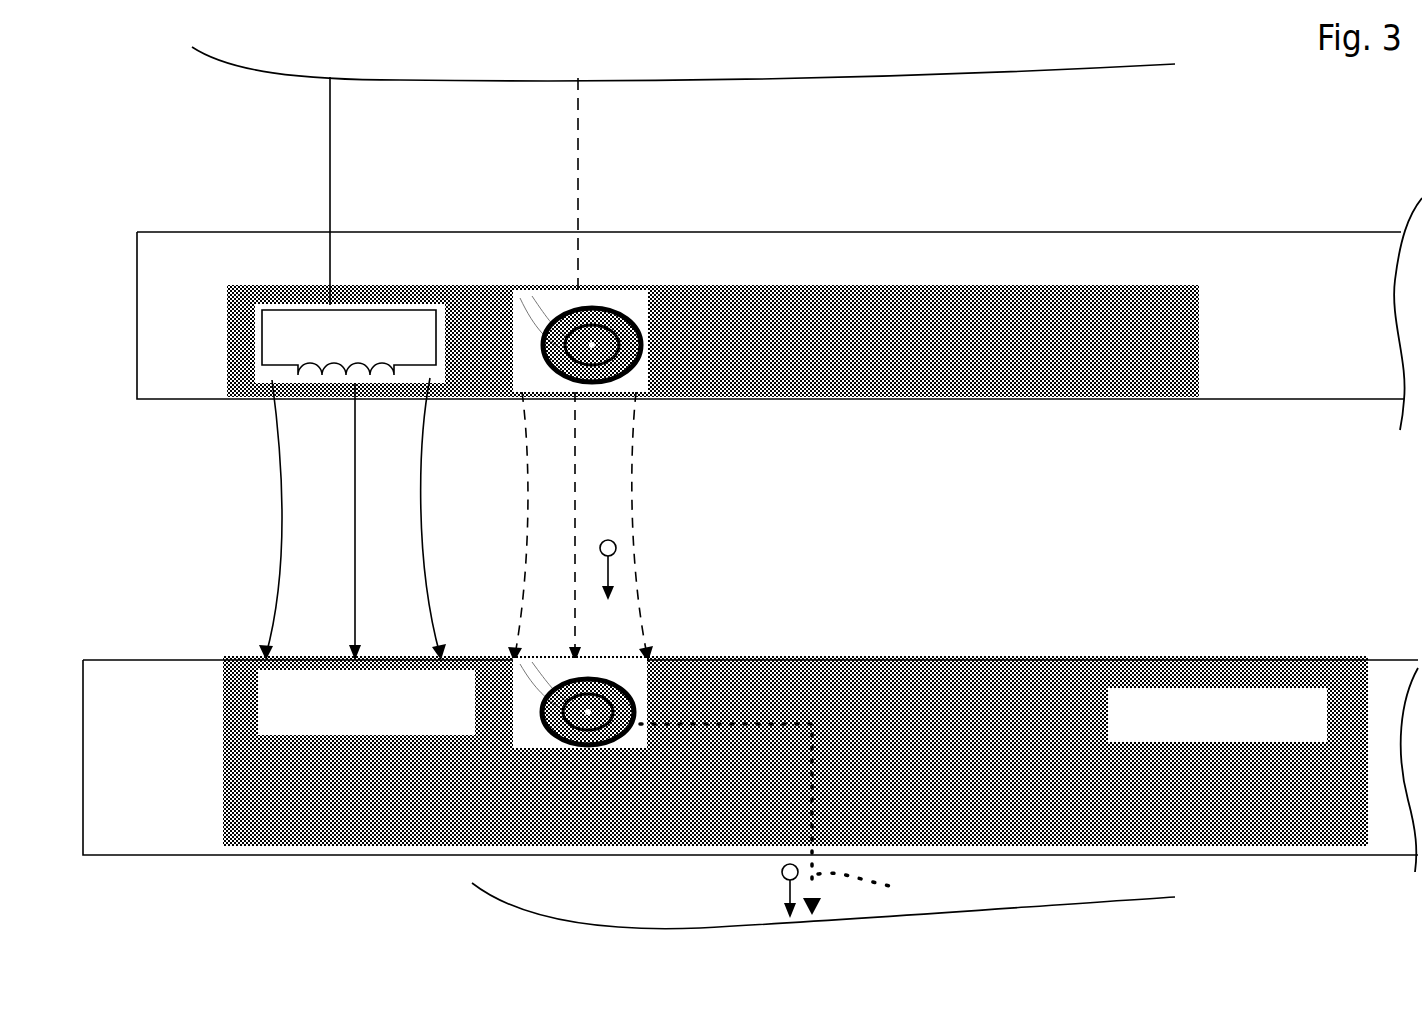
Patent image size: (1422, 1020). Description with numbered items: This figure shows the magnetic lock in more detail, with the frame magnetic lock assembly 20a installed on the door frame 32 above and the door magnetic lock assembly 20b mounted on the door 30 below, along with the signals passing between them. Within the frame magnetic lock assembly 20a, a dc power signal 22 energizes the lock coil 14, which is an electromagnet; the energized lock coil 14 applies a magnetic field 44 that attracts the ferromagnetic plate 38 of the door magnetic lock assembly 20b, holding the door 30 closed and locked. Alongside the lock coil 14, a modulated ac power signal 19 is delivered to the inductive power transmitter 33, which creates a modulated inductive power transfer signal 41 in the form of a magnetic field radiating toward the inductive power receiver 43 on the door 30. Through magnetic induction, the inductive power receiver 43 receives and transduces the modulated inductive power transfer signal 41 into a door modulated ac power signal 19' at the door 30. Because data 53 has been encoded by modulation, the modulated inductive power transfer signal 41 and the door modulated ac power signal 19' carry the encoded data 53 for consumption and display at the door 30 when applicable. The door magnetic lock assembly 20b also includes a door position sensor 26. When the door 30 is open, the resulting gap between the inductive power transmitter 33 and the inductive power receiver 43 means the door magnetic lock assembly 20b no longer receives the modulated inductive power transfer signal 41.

The lock coil 14 is at (275, 305).
The dc power signal 22 is at (330, 130).
The modulated ac power signal 19 is at (532, 185).
The inductive power transmitter 33 is at (650, 318).
The door frame 32 is at (1320, 359).
The frame magnetic lock assembly 20a is at (1199, 347).
The door magnetic lock assembly 20b is at (1213, 657).
The magnetic field 44 is at (420, 545).
The modulated inductive power transfer signal 41 is at (632, 505).
The data 53 is at (608, 573).
The inductive power receiver 43 is at (645, 688).
The ferromagnetic plate 38 is at (465, 709).
The door 30 is at (117, 794).
The door position sensor 26 is at (1208, 736).
The door modulated ac power signal 19' is at (781, 819).